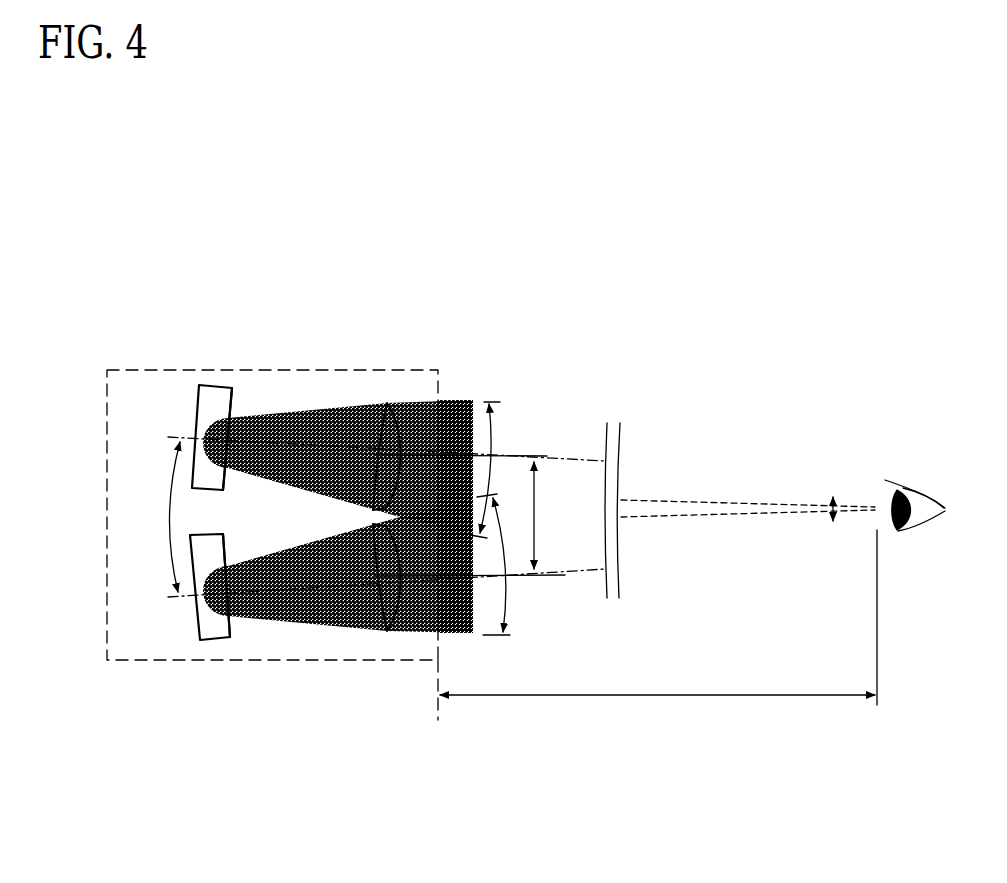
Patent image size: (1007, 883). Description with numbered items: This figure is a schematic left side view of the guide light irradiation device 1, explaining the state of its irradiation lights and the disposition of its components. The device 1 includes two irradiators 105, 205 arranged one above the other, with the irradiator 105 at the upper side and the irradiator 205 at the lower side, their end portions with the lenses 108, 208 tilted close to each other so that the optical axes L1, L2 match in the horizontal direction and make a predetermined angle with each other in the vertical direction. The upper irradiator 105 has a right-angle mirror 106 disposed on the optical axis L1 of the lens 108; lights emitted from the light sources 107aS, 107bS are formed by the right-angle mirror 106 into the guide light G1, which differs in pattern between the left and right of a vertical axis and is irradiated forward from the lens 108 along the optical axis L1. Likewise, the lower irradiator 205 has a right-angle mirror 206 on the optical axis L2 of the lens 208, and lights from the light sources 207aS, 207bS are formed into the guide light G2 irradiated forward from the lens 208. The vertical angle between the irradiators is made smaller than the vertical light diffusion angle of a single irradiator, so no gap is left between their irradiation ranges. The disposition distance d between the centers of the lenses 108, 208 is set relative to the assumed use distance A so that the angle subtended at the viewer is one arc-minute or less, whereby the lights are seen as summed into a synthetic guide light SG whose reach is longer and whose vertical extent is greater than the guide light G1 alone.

The guide light irradiation device 1 is at (126, 369).
The irradiator 105 is at (142, 434).
The irradiator 205 is at (142, 600).
The right-angle mirror 106 is at (205, 385).
The right-angle mirror 206 is at (218, 640).
The light source 107bS is at (228, 440).
The light source 107aS is at (227, 439).
The light source 207bS is at (228, 592).
The light source 207aS is at (226, 585).
The optical axis L1 is at (288, 445).
The optical axis L2 is at (254, 590).
The guide light G1 is at (337, 402).
The guide light G2 is at (315, 627).
The lens 108 is at (387, 405).
The lens 208 is at (387, 632).
The synthetic guide light SG is at (465, 400).
The disposition distance d is at (548, 515).
The assumed use distance A is at (657, 625).